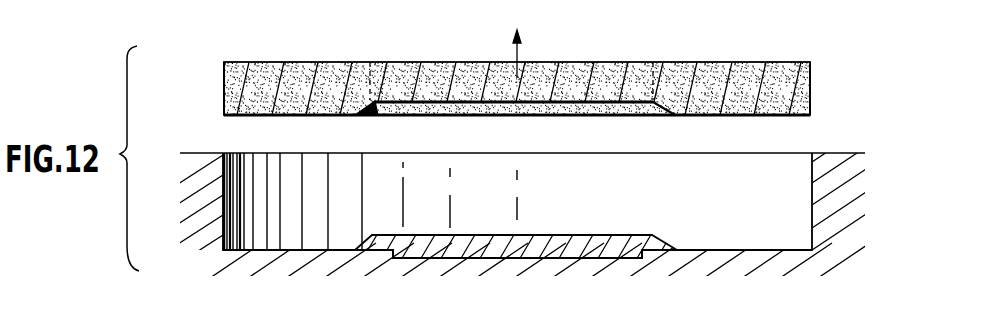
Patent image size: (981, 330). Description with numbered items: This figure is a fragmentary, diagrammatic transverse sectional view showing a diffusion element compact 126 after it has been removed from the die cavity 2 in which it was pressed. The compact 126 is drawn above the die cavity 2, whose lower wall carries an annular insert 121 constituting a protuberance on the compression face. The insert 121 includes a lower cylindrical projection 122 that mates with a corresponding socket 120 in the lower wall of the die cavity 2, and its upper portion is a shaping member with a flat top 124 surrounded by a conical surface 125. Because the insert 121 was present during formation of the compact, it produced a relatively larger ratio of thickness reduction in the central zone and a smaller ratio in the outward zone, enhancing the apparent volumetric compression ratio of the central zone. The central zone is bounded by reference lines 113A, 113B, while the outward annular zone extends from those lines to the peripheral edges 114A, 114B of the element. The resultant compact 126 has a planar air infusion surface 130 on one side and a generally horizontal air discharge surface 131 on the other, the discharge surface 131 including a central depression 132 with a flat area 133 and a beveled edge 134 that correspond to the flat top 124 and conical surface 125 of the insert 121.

The die cavity 2 is at (770, 207).
The reference line 113A is at (369, 58).
The reference line 113B is at (665, 58).
The peripheral edge 114A is at (224, 97).
The peripheral edge 114B is at (812, 92).
The socket 120 is at (415, 262).
The annular insert 121 is at (478, 248).
The lower cylindrical projection 122 is at (643, 259).
The flat top 124 is at (581, 234).
The conical surface 125 is at (362, 246).
The compact 126 is at (543, 59).
The planar air infusion surface 130 is at (775, 60).
The air discharge surface 131 is at (764, 118).
The central depression 132 is at (438, 122).
The flat area 133 is at (546, 104).
The beveled edge 134 is at (663, 110).